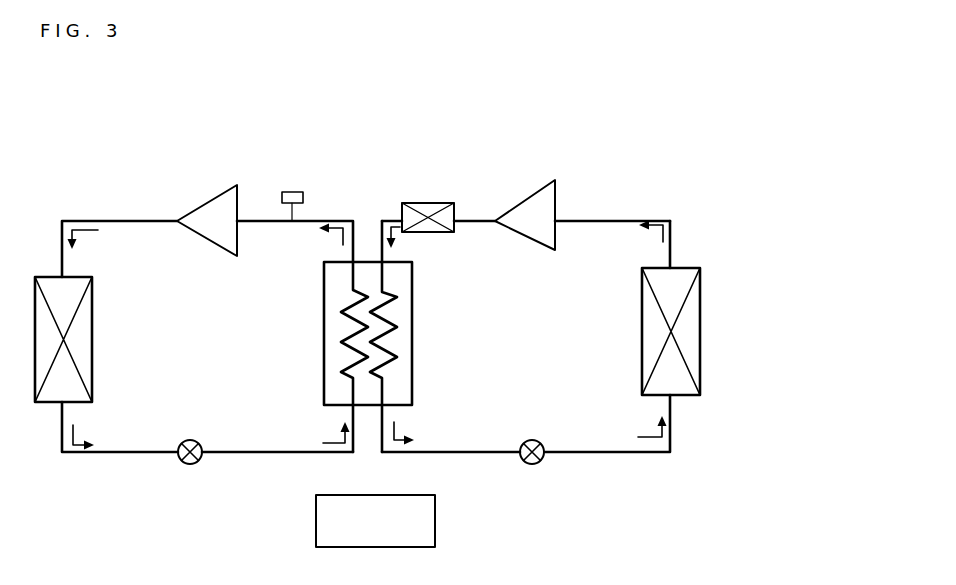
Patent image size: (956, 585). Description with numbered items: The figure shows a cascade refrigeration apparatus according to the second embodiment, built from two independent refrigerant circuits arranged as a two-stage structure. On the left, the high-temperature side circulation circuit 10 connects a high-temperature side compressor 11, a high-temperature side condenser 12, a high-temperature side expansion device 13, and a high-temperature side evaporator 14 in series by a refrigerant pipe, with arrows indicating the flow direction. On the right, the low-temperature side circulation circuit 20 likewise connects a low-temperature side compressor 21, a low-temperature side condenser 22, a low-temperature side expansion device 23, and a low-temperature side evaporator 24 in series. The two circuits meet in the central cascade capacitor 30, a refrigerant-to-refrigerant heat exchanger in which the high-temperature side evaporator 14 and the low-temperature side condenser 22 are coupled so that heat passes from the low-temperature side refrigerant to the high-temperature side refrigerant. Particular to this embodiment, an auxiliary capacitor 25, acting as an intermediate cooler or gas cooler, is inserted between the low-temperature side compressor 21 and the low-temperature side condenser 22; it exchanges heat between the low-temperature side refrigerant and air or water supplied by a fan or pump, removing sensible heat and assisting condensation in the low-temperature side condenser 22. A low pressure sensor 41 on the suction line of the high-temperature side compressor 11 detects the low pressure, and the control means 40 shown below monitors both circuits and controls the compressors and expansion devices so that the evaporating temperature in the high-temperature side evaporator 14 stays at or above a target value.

The high-temperature side circulation circuit 10 is at (113, 225).
The high-temperature side compressor 11 is at (237, 185).
The high-temperature side condenser 12 is at (92, 323).
The high-temperature side expansion device 13 is at (181, 444).
The high-temperature side evaporator 14 is at (340, 312).
The low-temperature side circulation circuit 20 is at (600, 221).
The low-temperature side compressor 21 is at (556, 181).
The low-temperature side condenser 22 is at (392, 312).
The low-temperature side expansion device 23 is at (524, 441).
The low-temperature side evaporator 24 is at (642, 328).
The auxiliary capacitor 25 is at (457, 210).
The cascade capacitor 30 is at (324, 352).
The control means 40 is at (435, 527).
The low pressure sensor 41 is at (299, 192).